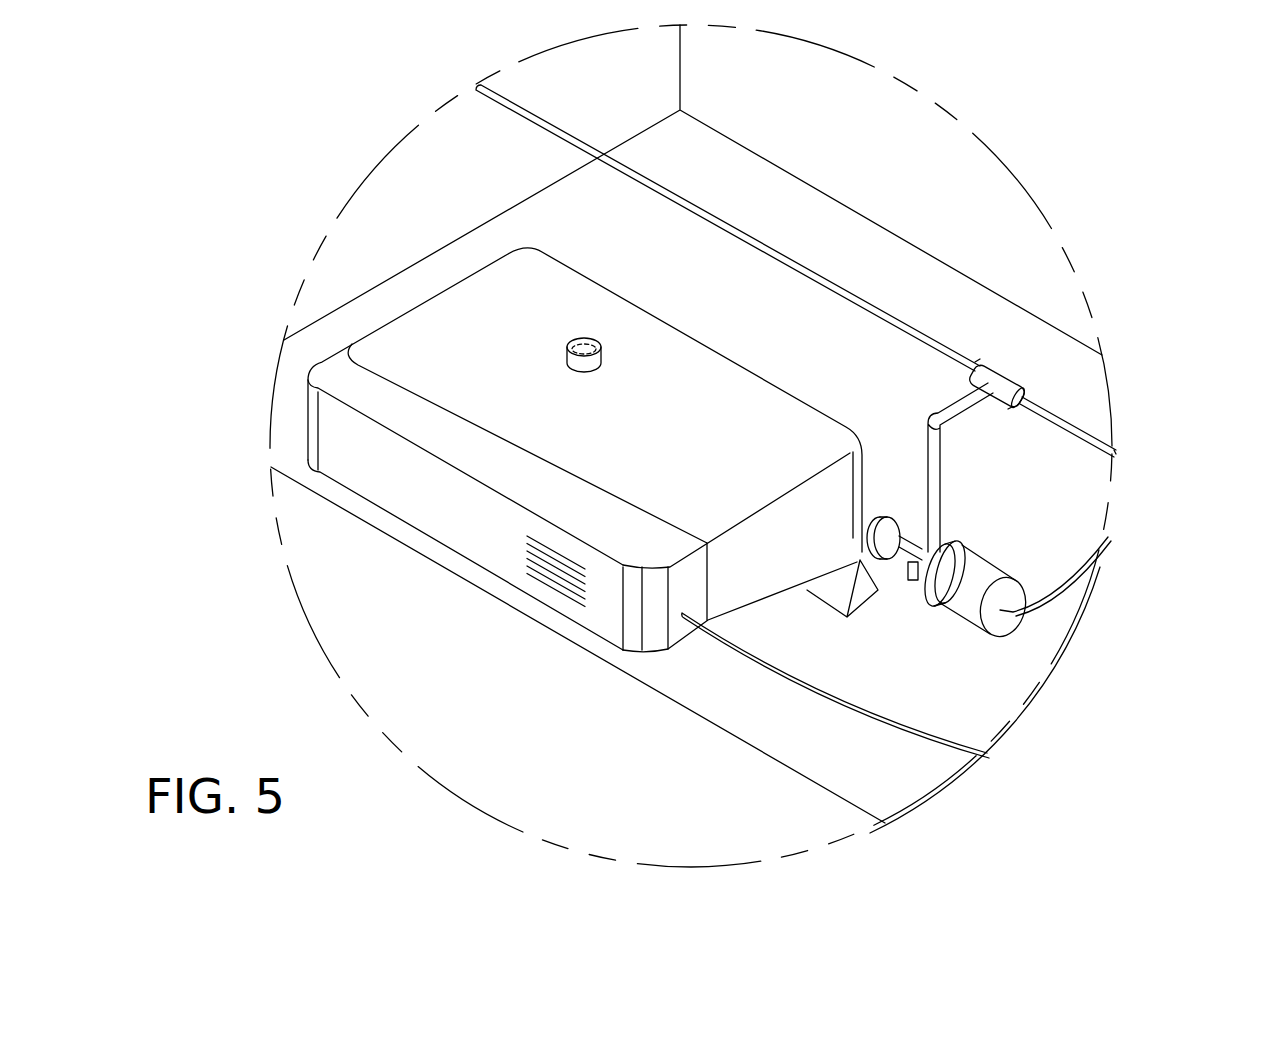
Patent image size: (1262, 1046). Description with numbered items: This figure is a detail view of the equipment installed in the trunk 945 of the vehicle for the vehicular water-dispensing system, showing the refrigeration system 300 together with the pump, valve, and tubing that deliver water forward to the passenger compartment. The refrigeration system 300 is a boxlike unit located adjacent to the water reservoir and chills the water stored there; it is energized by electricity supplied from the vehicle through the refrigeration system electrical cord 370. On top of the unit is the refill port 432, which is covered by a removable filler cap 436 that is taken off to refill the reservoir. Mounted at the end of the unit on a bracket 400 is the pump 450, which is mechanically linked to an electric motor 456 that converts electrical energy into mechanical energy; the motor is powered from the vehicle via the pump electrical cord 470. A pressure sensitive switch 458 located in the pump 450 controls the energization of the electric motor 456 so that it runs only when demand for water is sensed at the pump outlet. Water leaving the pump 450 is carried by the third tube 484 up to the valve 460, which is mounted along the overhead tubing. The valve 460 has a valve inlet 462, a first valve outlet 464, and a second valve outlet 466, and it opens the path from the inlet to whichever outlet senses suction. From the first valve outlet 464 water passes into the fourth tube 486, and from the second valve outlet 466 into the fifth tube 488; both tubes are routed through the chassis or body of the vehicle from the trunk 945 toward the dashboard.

The refrigeration system 300 is at (450, 527).
The refrigeration system electrical cord 370 is at (910, 750).
The mounting bracket 400 is at (833, 602).
The refill port 432 is at (582, 345).
The filler cap 436 is at (602, 360).
The pump 450 is at (927, 554).
The electric motor 456 is at (959, 598).
The pressure sensitive switch 458 is at (908, 575).
The valve 460 is at (1003, 372).
The valve inlet 462 is at (1006, 405).
The first valve outlet 464 is at (972, 364).
The second valve outlet 466 is at (1028, 391).
The pump electrical cord 470 is at (1055, 602).
The third tube 484 is at (928, 445).
The fourth tube 486 is at (570, 138).
The fifth tube 488 is at (1091, 453).
The trunk 945 is at (388, 212).